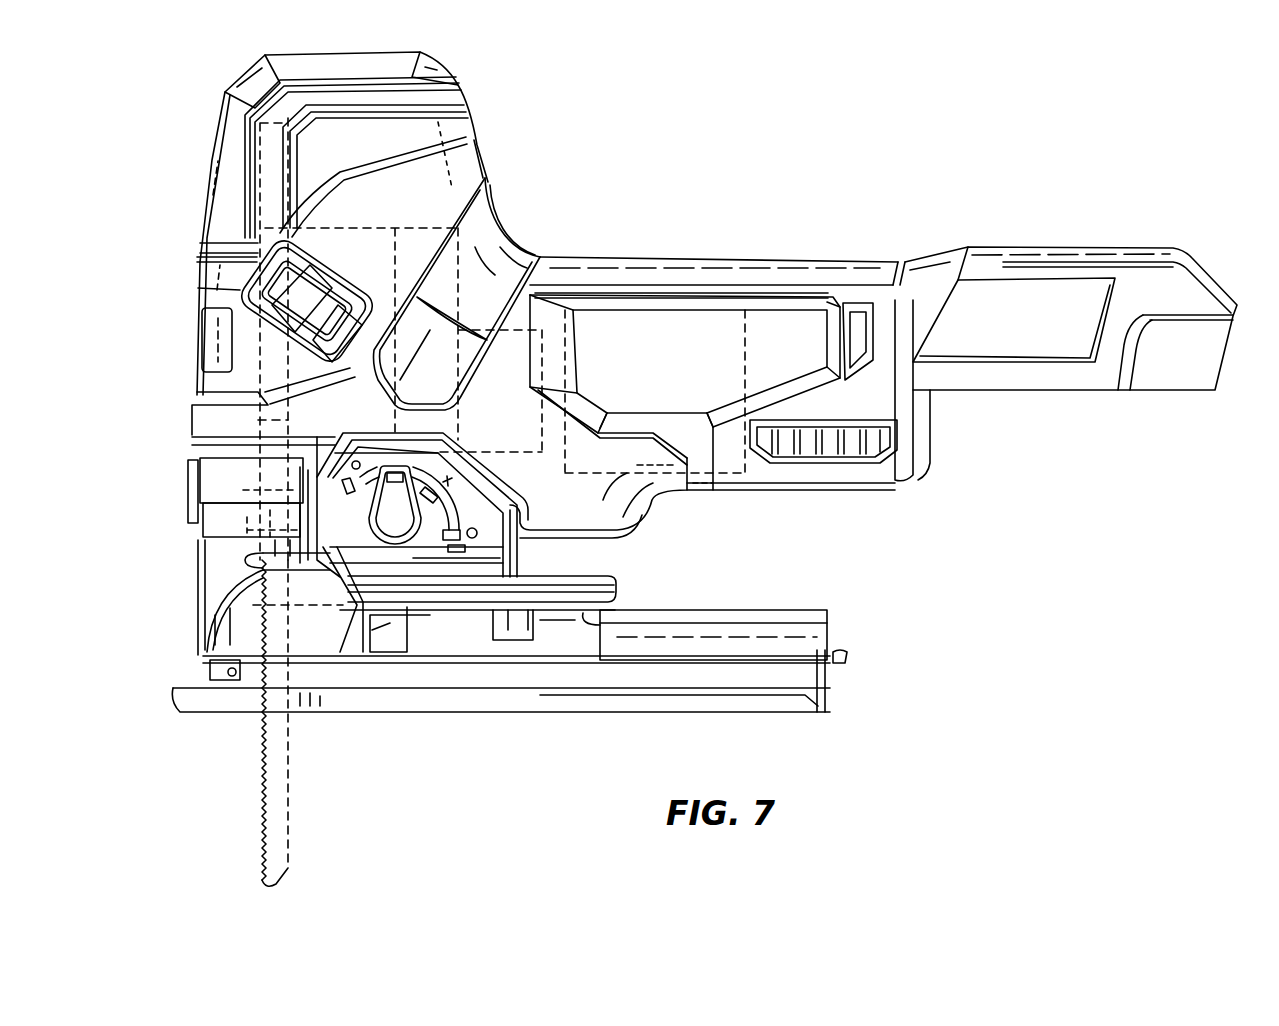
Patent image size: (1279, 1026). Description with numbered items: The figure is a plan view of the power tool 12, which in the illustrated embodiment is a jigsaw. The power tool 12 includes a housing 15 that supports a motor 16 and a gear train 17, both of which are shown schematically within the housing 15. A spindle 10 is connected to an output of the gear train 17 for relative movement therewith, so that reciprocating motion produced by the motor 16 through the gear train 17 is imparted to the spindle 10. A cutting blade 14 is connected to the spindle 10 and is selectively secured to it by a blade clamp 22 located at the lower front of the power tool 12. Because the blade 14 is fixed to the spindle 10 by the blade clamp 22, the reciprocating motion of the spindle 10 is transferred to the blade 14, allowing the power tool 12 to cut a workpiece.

The spindle 10 is at (257, 362).
The power tool 12 is at (704, 445).
The cutting blade 14 is at (285, 773).
The housing 15 is at (457, 132).
The motor 16 is at (680, 305).
The gear train 17 is at (467, 233).
The blade clamp 22 is at (222, 483).